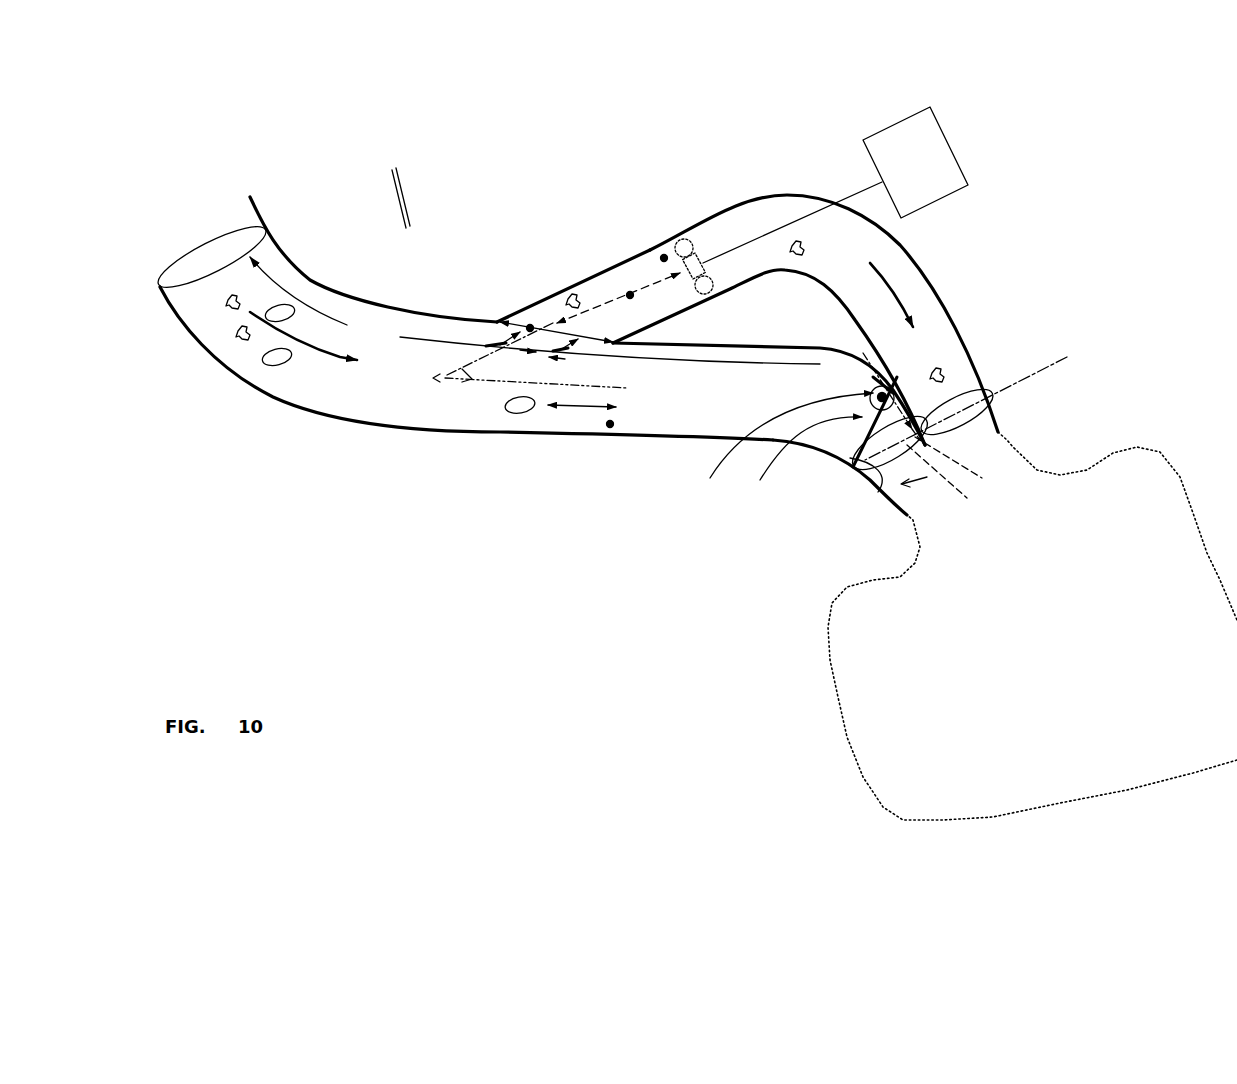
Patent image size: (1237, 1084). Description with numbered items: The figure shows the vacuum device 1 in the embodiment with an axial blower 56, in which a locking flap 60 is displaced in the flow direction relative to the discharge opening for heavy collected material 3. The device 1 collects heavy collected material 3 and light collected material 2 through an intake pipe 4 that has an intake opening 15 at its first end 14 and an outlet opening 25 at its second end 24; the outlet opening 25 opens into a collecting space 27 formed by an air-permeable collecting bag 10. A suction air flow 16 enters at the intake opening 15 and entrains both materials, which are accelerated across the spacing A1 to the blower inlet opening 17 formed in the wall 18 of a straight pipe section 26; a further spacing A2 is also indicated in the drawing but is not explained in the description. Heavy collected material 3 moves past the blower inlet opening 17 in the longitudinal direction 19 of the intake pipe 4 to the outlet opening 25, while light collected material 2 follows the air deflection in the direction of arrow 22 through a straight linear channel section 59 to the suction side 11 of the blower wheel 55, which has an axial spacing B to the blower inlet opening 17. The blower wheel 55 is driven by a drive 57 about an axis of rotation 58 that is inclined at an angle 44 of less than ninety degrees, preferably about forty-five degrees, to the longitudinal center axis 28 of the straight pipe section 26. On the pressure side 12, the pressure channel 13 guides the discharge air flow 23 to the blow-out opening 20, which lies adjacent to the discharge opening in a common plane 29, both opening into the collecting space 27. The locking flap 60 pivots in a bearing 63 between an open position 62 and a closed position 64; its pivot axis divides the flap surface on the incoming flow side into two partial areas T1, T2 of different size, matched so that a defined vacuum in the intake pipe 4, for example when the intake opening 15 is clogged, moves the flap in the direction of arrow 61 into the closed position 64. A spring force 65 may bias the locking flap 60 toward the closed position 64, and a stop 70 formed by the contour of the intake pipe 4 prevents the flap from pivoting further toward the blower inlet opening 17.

The vacuum device 1 is at (425, 272).
The light collected material 2 is at (227, 303).
The heavy collected material 3 is at (273, 357).
The intake pipe 4 is at (370, 397).
The collecting bag 10 is at (850, 658).
The suction side 11 is at (664, 258).
The pressure side 12 is at (717, 270).
The pressure channel 13 is at (932, 313).
The first end 14 is at (190, 300).
The intake opening 15 is at (177, 270).
The suction air flow 16 is at (313, 353).
The blower inlet opening 17 is at (530, 328).
The wall 18 is at (345, 291).
The longitudinal direction 19 is at (573, 408).
The blow-out opening 20 is at (975, 411).
The arrow 22 is at (512, 345).
The discharge air flow 23 is at (888, 280).
The second end 24 is at (840, 433).
The outlet opening 25 is at (887, 483).
The straight pipe section 26 is at (610, 428).
The collecting space 27 is at (1026, 642).
The longitudinal center axis 28 is at (627, 388).
The plane 29 is at (1022, 383).
The angle 44 is at (462, 377).
The blower wheel 55 is at (688, 243).
The axial blower 56 is at (706, 250).
The drive 57 is at (887, 150).
The axis of rotation 58 is at (778, 227).
The linear channel section 59 is at (550, 291).
The locking flap 60 is at (845, 437).
The arrow 61 is at (927, 460).
The open position 62 is at (948, 483).
The bearing 63 is at (910, 397).
The closed position 64 is at (799, 459).
The spring force 65 is at (785, 447).
The stop 70 is at (852, 447).
The spacing A1 is at (535, 310).
The second flow path A2 is at (865, 417).
The axial spacing B is at (630, 295).
The partial area T1 is at (882, 383).
The partial area T2 is at (961, 470).